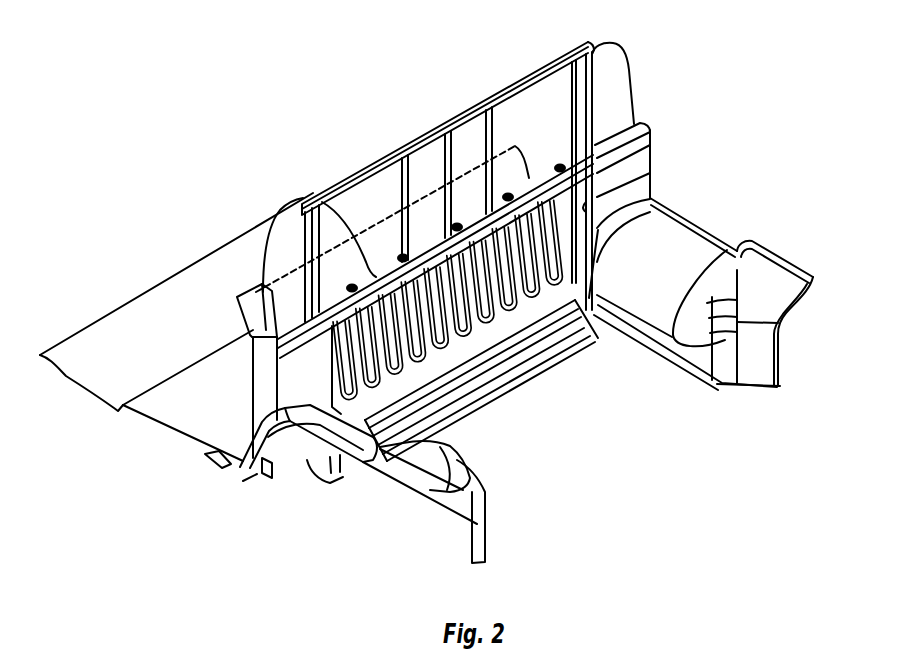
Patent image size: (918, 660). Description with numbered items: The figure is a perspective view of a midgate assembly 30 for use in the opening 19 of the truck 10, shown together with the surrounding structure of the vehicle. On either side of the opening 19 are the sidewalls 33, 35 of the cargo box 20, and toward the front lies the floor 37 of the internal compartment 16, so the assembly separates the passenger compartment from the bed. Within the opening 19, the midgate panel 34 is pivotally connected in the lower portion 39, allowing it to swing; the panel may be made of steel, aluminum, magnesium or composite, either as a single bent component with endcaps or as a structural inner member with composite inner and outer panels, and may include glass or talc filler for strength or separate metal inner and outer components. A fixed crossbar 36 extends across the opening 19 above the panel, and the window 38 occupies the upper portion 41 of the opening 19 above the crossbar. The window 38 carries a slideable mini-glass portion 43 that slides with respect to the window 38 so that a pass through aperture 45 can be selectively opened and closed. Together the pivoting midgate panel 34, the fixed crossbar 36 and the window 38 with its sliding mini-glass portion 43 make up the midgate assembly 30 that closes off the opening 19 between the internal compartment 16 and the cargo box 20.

The truck 10 is at (138, 232).
The internal compartment 16 is at (197, 397).
The opening 19 is at (650, 175).
The cargo box 20 is at (577, 418).
The midgate assembly 30 is at (440, 98).
The sidewall 33 is at (672, 250).
The midgate panel 34 is at (533, 173).
The sidewall 35 is at (360, 447).
The fixed crossbar 36 is at (318, 193).
The floor 37 is at (170, 402).
The window 38 is at (355, 205).
The lower portion 39 is at (648, 137).
The upper portion 41 is at (347, 205).
The slideable mini-glass portion 43 is at (463, 147).
The pass through aperture 45 is at (425, 162).